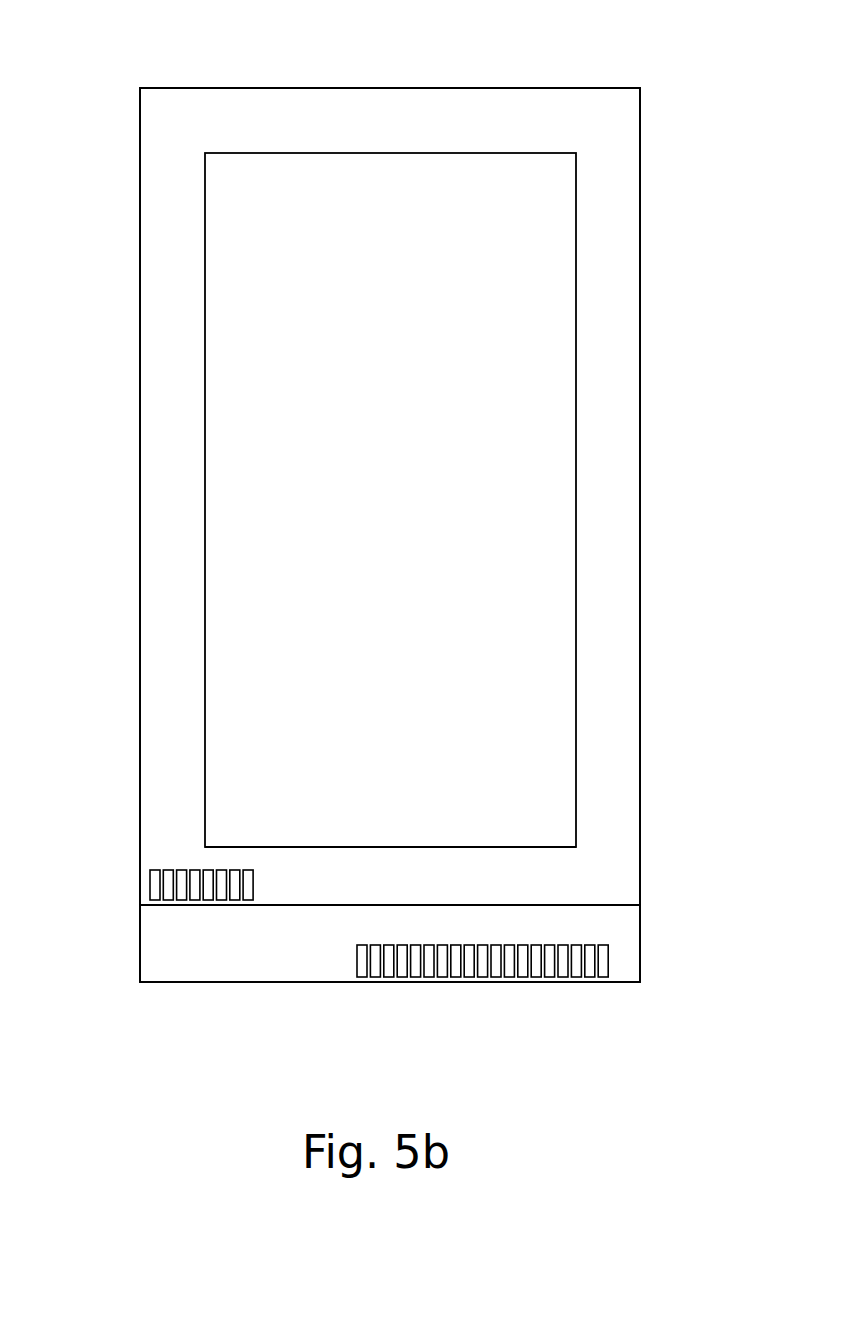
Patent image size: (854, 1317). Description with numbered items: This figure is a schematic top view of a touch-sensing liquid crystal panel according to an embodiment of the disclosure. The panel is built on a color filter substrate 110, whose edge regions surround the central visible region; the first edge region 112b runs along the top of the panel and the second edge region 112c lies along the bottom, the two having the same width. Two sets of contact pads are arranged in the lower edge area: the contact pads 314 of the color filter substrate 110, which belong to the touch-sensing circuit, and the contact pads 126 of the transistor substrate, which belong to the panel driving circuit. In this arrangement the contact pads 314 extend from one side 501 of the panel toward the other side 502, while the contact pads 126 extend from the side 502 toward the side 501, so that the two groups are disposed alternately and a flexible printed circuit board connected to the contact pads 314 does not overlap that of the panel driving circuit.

The color filter substrate 110 is at (642, 122).
The first edge region 112b is at (388, 103).
The second edge region 112c is at (305, 888).
The contact pads 126 is at (483, 980).
The contact pads 314 is at (140, 887).
The side 501 is at (138, 783).
The side 502 is at (640, 948).